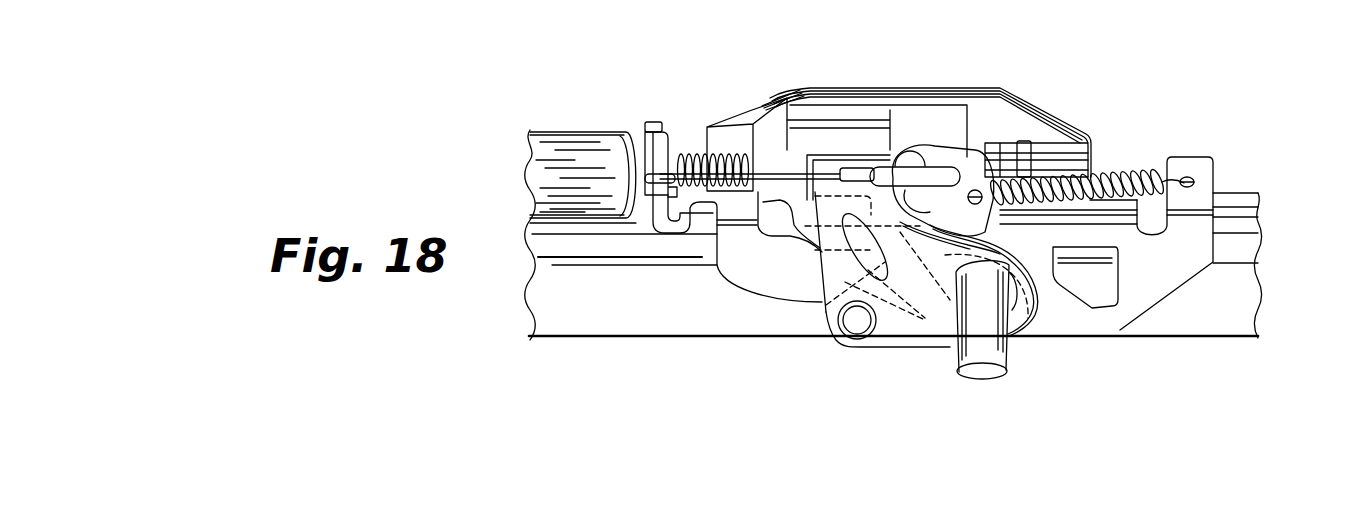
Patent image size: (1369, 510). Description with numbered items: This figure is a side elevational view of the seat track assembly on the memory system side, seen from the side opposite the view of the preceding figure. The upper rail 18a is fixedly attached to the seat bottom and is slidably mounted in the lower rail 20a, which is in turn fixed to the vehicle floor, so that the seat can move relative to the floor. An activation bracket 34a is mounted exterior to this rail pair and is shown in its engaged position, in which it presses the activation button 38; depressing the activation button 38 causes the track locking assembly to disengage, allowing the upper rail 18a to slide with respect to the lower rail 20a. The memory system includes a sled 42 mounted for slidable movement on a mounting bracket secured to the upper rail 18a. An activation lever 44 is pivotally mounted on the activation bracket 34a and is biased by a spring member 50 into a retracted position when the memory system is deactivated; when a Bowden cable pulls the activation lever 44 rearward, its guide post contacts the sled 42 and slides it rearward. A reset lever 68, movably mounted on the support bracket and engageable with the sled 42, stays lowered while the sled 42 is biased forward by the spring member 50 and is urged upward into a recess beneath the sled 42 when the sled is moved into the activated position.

The upper rail 18a is at (1235, 195).
The lower rail 20a is at (1238, 243).
The activation bracket 34a is at (830, 187).
The activation button 38 is at (752, 124).
The sled 42 is at (880, 88).
The activation lever 44 is at (955, 158).
The spring member 50 is at (1105, 178).
The reset lever 68 is at (780, 222).